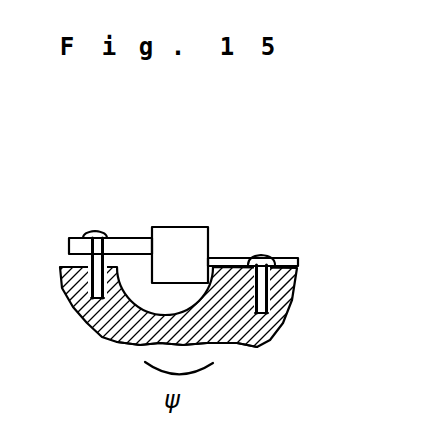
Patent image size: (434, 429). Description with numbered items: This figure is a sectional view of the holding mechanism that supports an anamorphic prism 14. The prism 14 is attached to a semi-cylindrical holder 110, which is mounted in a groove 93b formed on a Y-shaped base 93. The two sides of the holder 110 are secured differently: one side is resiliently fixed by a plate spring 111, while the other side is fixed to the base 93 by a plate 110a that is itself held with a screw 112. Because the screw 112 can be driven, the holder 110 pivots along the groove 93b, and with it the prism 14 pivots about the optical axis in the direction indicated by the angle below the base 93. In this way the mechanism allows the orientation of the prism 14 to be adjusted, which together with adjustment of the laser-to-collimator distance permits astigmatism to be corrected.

The anamorphic prism 14 is at (183, 227).
The Y-shaped base 93 is at (283, 317).
The groove 93b is at (210, 337).
The semi-cylindrical holder 110 is at (142, 285).
The plate 110a is at (126, 245).
The plate spring 111 is at (227, 257).
The screw 112 is at (88, 233).